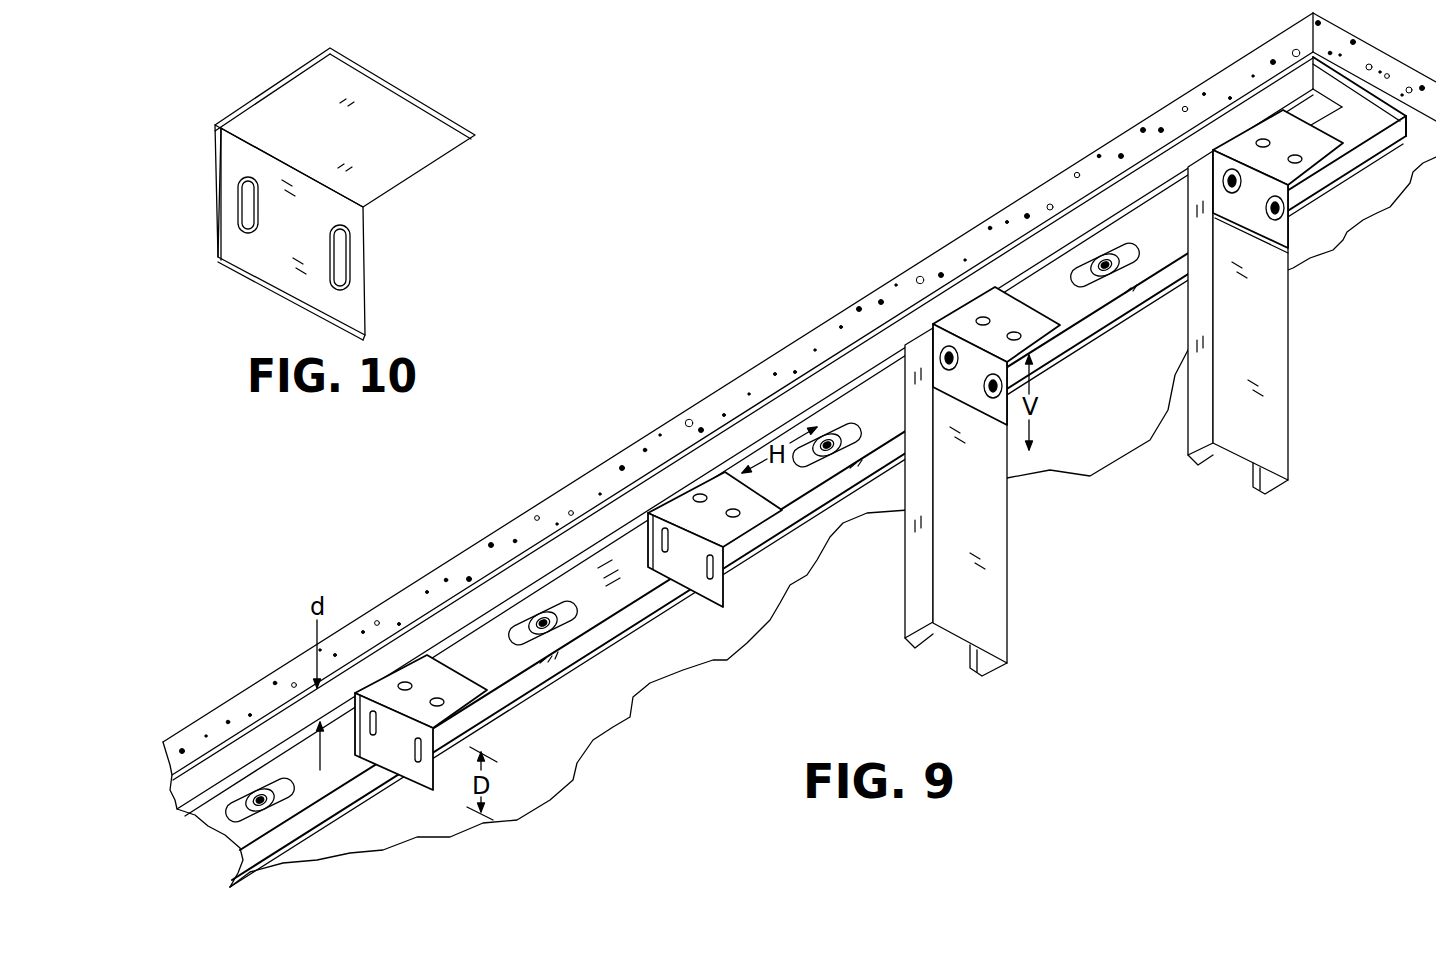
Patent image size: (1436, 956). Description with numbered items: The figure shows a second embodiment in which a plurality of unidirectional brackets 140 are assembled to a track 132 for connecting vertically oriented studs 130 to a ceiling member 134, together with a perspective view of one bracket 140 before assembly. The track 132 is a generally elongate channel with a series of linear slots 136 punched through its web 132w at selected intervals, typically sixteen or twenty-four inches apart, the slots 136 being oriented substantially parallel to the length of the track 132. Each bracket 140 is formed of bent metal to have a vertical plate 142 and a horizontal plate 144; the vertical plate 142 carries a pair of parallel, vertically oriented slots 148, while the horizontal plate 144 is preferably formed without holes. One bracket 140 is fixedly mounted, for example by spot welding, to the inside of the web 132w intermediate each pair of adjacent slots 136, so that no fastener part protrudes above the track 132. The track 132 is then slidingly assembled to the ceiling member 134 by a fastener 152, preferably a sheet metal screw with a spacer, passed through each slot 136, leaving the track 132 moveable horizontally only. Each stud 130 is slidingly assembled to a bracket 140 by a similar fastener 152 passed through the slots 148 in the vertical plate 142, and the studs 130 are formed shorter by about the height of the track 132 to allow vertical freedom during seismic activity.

In FIG. 9, the stud 130 is at (1283, 343).
In FIG. 9, the track 132 is at (775, 523).
In FIG. 9, the web 132w is at (630, 583).
In FIG. 9, the ceiling member 134 is at (560, 766).
In FIG. 9, the slot 136 is at (1133, 254).
In FIG. 9, the bracket 140 is at (413, 790).
In FIG. 10, the bracket 140 is at (267, 307).
In FIG. 10, the vertical plate 142 is at (353, 305).
In FIG. 10, the horizontal plate 144 is at (448, 138).
In FIG. 10, the slot 148 is at (347, 258).
In FIG. 9, the fastener 152 is at (1112, 280).